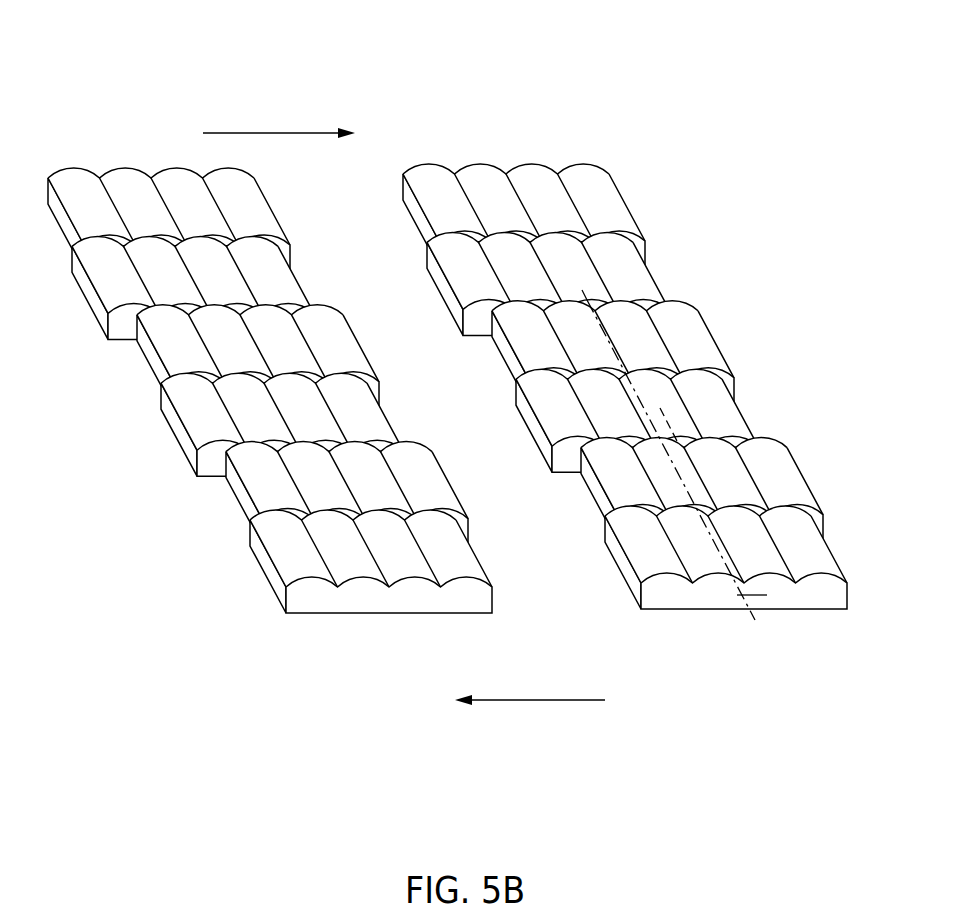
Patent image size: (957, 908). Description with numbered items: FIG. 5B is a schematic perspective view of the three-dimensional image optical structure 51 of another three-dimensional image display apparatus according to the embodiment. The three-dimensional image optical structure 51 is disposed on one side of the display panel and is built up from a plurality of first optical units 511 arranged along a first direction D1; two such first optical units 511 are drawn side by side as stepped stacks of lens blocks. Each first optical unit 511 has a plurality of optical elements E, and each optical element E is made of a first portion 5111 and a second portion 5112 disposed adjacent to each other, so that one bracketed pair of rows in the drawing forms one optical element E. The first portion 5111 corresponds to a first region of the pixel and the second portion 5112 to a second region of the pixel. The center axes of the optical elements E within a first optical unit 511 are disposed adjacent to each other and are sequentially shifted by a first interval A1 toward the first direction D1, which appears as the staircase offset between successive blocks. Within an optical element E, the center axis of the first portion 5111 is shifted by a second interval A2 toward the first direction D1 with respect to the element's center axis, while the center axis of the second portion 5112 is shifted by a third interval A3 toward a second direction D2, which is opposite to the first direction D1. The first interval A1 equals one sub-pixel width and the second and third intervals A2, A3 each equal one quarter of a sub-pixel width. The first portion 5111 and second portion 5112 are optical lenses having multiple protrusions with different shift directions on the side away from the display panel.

The 3D image optical structure 51 is at (443, 365).
The first optical unit 511 is at (447, 426).
The first portion 5111 is at (627, 202).
The second portion 5112 is at (653, 271).
The optical element E is at (600, 249).
The first interval A1 is at (680, 452).
The second interval A2 is at (690, 490).
The third interval A3 is at (755, 613).
The first direction D1 is at (279, 121).
The second direction D2 is at (530, 715).